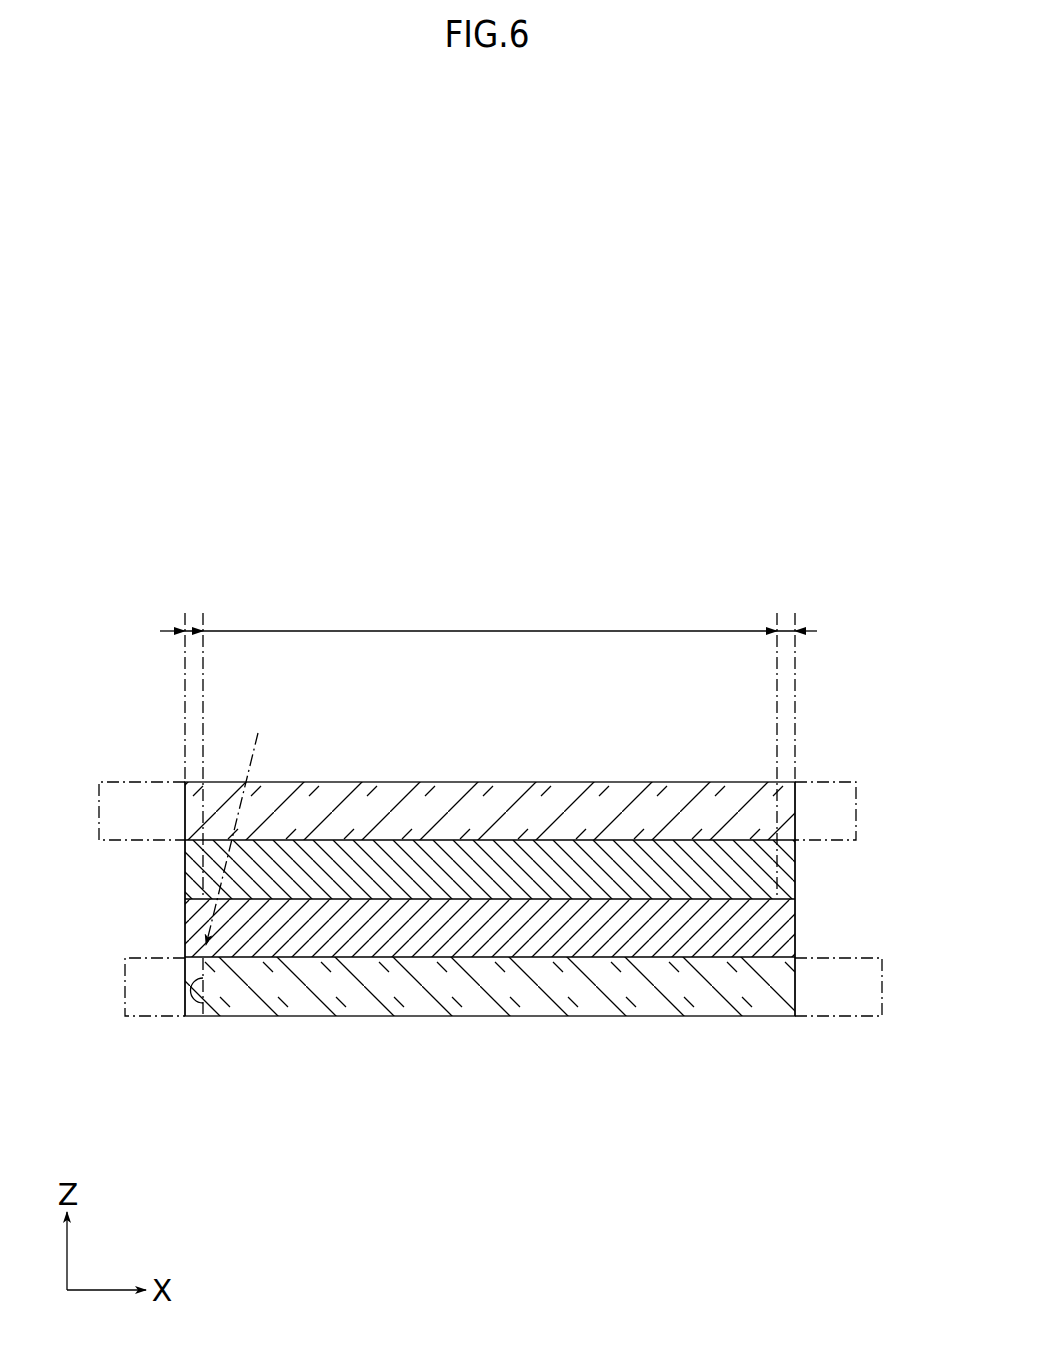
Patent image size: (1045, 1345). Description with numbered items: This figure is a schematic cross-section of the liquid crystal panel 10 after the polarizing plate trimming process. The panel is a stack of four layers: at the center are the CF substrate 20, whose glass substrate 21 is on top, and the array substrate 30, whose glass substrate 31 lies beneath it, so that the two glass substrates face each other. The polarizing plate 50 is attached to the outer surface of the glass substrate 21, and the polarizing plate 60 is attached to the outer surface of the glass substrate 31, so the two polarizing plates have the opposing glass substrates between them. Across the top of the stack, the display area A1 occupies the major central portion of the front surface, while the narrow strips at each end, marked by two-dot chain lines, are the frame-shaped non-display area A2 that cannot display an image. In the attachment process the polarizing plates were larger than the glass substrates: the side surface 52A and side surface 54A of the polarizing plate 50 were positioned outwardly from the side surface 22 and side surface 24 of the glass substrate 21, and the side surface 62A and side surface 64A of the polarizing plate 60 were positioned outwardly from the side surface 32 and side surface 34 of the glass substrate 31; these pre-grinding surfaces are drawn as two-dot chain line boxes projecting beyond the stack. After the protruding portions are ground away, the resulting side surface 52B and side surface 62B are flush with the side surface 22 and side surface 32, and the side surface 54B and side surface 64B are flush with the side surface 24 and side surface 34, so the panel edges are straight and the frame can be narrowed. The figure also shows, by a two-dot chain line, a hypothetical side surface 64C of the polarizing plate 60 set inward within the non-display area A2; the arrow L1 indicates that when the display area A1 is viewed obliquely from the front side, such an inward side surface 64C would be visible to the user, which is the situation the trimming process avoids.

The liquid crystal panel 10 is at (662, 580).
The CF substrate 20 is at (490, 806).
The glass substrate 21 is at (358, 870).
The side surface 22 is at (795, 875).
The side surface 24 is at (185, 873).
The array substrate 30 is at (490, 986).
The glass substrate 31 is at (345, 935).
The side surface 32 is at (795, 938).
The side surface 34 is at (185, 921).
The polarizing plate 50 is at (490, 805).
The side surface before grinding 52A is at (856, 806).
The side surface after grinding 52B is at (795, 810).
The side surface before grinding 54A is at (99, 807).
The side surface after grinding 54B is at (185, 808).
The polarizing plate 60 is at (521, 1000).
The side surface before grinding 62A is at (882, 978).
The side surface after grinding 62B is at (795, 988).
The side surface before grinding 64A is at (123, 1000).
The side surface after grinding 64B is at (185, 988).
The side surface 64C is at (197, 1018).
The display area A1 is at (490, 612).
The non-display area A2 is at (784, 630).
The arrow L1 is at (257, 752).